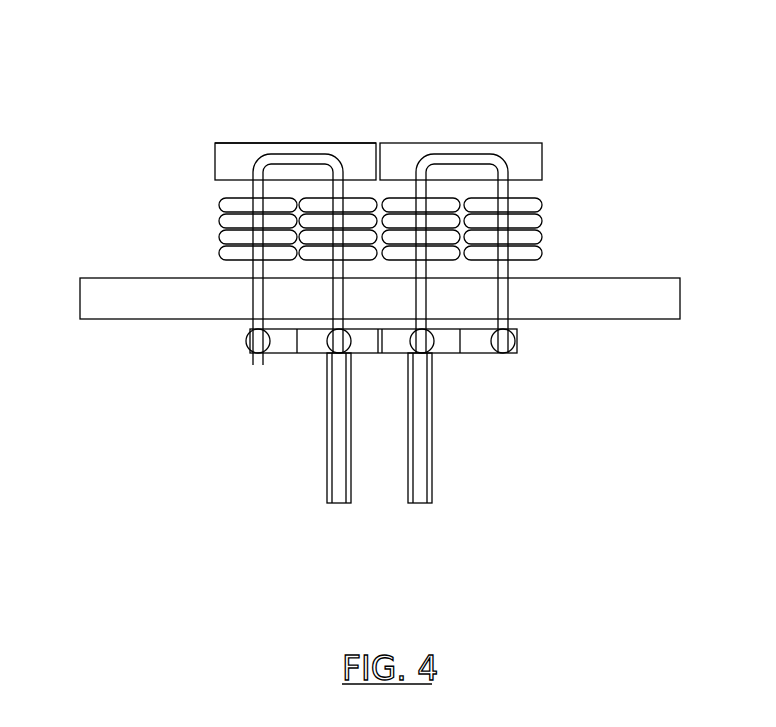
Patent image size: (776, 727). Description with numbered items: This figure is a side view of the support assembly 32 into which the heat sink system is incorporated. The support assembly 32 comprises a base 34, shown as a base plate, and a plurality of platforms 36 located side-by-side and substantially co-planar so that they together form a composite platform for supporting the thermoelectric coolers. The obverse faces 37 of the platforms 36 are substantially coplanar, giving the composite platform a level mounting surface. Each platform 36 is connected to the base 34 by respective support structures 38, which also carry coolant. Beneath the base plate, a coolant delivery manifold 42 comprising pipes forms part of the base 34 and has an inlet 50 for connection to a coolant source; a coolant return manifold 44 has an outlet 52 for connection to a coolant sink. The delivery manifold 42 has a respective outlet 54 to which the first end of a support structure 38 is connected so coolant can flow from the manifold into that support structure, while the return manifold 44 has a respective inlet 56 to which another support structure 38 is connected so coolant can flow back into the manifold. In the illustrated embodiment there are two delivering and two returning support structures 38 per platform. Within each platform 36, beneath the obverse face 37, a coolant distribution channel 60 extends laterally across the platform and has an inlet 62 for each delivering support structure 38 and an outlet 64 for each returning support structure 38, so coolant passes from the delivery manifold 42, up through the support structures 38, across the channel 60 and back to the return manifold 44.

The support assembly 32 is at (387, 105).
The base 34 is at (686, 291).
The platform 36 is at (208, 152).
The obverse face 37 is at (237, 142).
The support structure 38 is at (222, 216).
The coolant delivery manifold 42 is at (260, 358).
The coolant return manifold 44 is at (490, 358).
The inlet 50 is at (339, 495).
The outlet 52 is at (420, 503).
The outlet 54 is at (246, 350).
The inlet 56 is at (510, 349).
The coolant distribution channel 60 is at (292, 155).
The inlet 62 is at (416, 172).
The outlet 64 is at (346, 162).